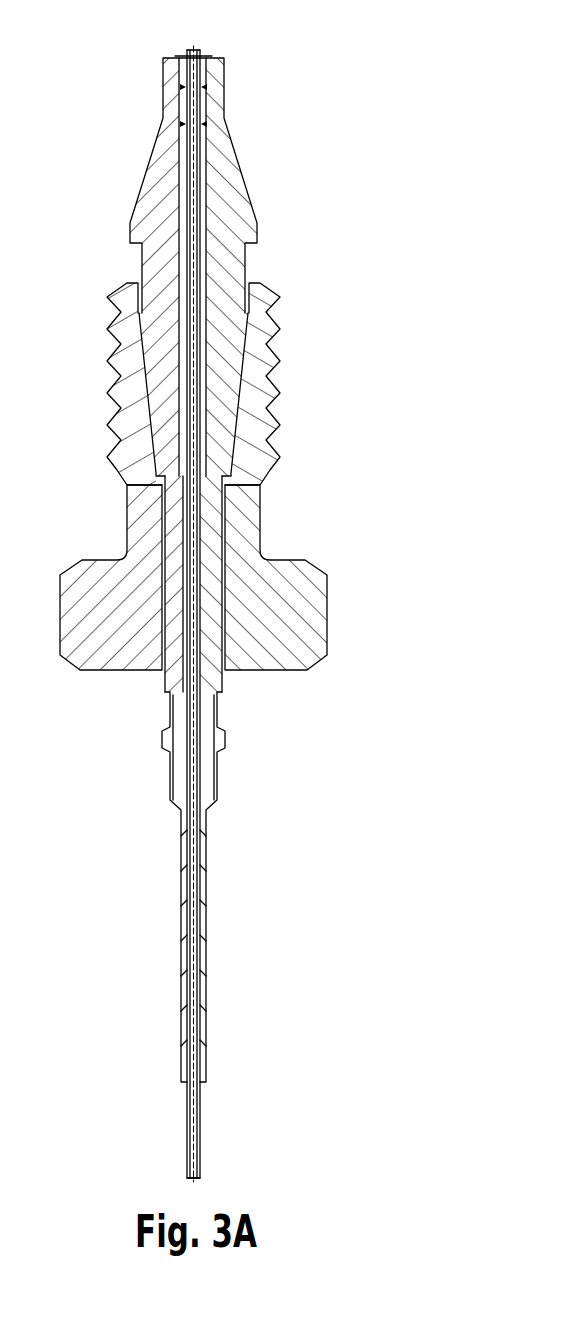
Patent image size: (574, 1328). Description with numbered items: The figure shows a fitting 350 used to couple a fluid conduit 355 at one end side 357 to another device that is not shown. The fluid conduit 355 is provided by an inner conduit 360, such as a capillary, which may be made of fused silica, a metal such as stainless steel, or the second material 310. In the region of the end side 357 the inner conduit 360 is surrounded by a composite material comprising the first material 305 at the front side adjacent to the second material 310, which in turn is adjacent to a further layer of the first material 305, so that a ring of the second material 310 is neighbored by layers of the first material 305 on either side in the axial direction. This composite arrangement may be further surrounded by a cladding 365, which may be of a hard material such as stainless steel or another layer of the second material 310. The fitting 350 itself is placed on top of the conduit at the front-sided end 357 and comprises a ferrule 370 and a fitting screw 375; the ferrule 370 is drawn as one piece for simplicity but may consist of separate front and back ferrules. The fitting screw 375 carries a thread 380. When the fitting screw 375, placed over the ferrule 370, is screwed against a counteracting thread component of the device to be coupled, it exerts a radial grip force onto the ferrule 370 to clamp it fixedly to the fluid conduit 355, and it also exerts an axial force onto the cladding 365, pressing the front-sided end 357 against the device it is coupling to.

The fitting 350 is at (330, 120).
The end side 357 is at (204, 30).
The inner conduit 360 is at (199, 53).
The first material 305 is at (185, 57).
The second material 310 is at (180, 104).
The cladding 365 is at (170, 200).
The ferrule 370 is at (246, 210).
The thread 380 is at (273, 348).
The fitting screw 375 is at (251, 523).
The fluid conduit 355 is at (198, 1186).